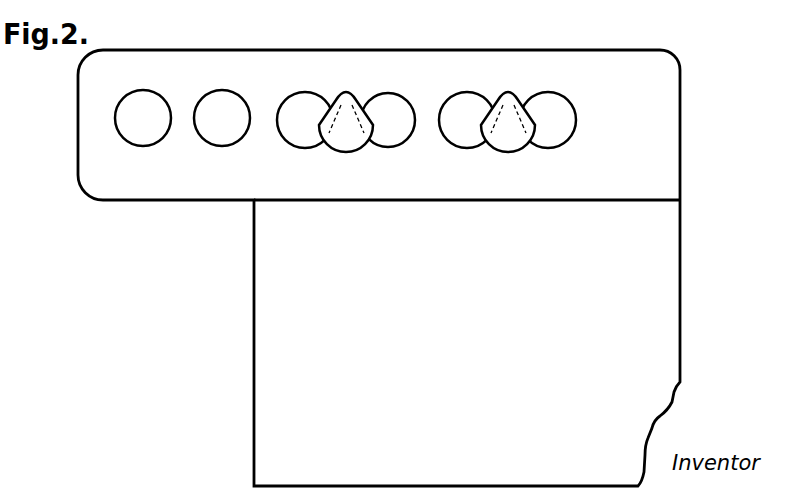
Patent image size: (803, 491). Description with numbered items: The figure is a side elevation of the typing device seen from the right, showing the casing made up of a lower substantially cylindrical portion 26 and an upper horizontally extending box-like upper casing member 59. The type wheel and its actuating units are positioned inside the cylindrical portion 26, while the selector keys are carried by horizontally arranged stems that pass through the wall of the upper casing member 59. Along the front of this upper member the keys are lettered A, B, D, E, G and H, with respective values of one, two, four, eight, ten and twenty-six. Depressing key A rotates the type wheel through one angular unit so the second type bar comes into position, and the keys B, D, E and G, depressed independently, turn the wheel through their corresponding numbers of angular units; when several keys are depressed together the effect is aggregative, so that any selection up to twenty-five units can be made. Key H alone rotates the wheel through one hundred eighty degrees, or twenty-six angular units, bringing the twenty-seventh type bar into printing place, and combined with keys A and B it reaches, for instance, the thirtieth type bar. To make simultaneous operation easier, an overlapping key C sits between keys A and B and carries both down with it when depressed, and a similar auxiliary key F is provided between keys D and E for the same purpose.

The upper casing member 59 is at (681, 123).
The cylindrical portion 26 is at (256, 318).
The key A is at (548, 109).
The key B is at (467, 109).
The overlapping key C is at (508, 110).
The key D is at (388, 109).
The key E is at (305, 109).
The auxiliary key F is at (346, 109).
The key G is at (222, 107).
The key H is at (143, 107).